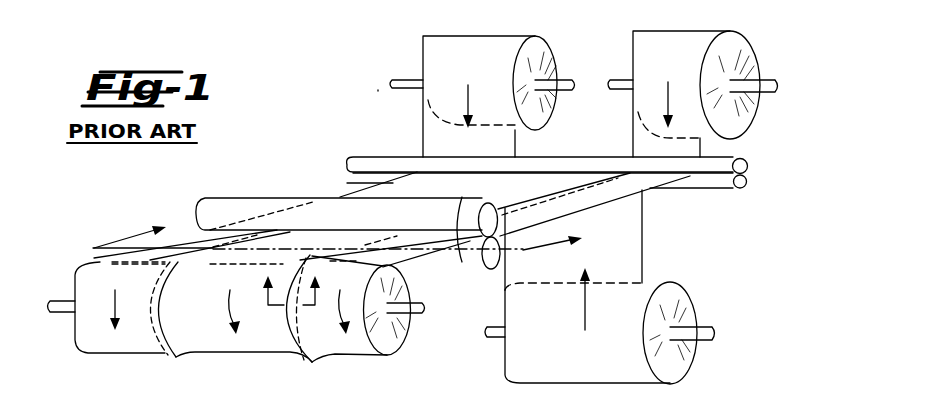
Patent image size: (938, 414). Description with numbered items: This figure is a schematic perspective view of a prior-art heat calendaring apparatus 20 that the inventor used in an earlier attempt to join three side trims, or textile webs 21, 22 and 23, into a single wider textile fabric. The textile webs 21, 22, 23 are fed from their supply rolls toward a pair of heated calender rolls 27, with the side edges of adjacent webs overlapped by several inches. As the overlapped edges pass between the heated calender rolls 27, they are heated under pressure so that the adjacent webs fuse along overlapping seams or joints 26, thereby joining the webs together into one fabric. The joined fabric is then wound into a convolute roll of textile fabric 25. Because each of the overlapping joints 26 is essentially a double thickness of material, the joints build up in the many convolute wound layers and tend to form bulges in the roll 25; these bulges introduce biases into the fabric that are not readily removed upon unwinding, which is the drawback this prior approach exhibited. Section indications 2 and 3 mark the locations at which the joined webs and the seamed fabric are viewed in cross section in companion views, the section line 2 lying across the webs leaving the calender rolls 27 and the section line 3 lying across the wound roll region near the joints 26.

The heat calendaring apparatus 20 is at (376, 102).
The textile web 21 is at (443, 56).
The textile web 23 is at (655, 55).
The heated calender rolls 27 is at (336, 218).
The textile web 22 is at (648, 378).
The convolute roll of textile fabric 25 is at (386, 362).
The overlapping seams or joints 26 is at (178, 360).
The section line 2- 2 is at (350, 234).
The section line 3- 3 is at (288, 306).